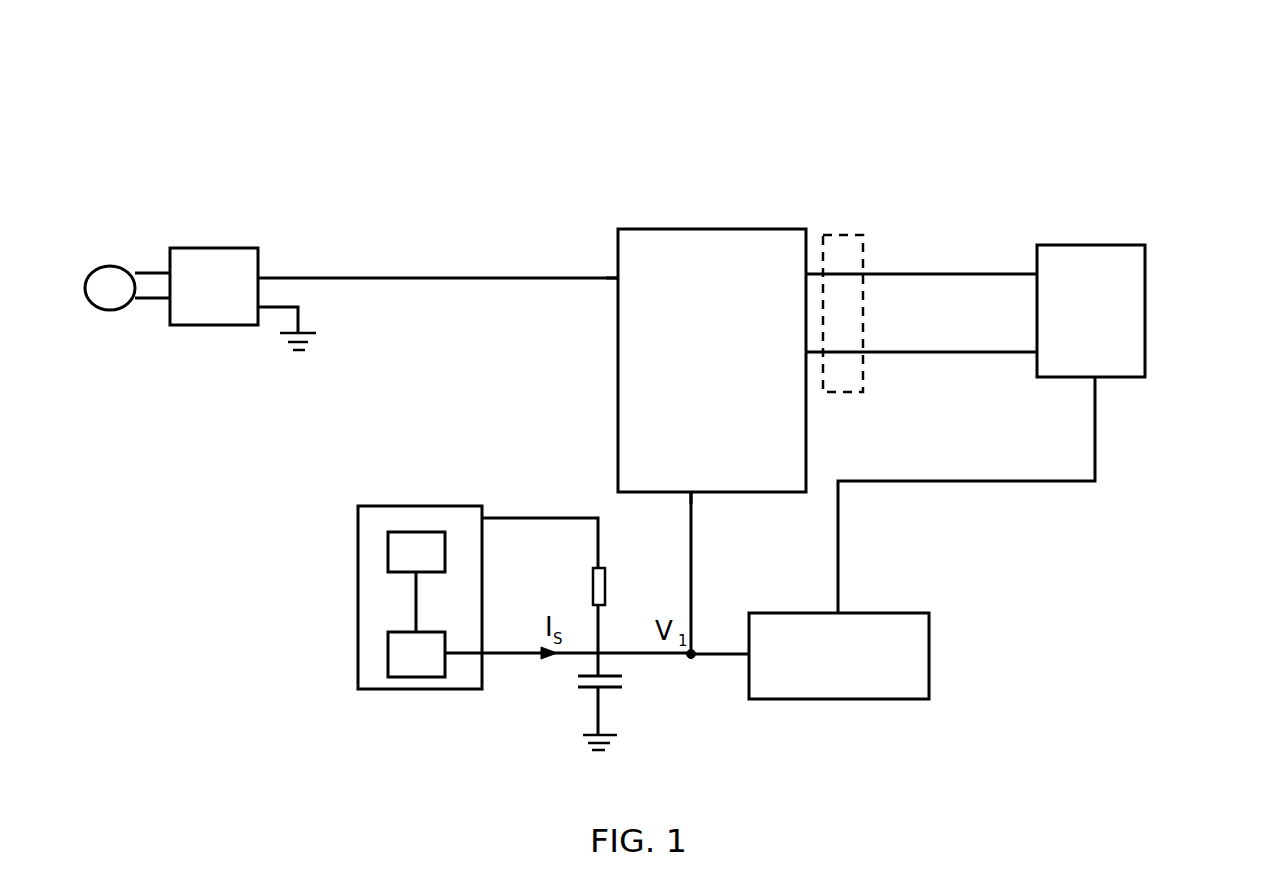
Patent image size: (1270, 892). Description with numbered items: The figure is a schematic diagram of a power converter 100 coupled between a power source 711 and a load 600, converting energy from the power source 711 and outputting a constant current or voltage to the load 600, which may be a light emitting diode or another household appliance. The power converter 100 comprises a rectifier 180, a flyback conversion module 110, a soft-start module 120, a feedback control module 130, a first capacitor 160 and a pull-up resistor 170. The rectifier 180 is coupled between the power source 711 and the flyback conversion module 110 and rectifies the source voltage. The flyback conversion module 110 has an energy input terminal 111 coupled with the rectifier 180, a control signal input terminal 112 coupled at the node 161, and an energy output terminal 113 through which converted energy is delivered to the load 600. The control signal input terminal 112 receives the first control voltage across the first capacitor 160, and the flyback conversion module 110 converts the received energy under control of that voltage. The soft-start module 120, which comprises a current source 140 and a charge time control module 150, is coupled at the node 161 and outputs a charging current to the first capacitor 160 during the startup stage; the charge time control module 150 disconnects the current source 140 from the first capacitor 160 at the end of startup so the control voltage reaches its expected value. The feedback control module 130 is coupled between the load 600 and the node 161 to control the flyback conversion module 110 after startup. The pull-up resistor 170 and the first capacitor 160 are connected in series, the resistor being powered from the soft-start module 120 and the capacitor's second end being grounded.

The power converter 100 is at (412, 98).
The power source 711 is at (108, 265).
The rectifier 180 is at (203, 248).
The flyback conversion module 110 is at (702, 229).
The energy input terminal 111 is at (618, 278).
The control signal input terminal 112 is at (692, 493).
The energy output terminal 113 is at (842, 237).
The load 600 is at (1147, 275).
The feedback control module 130 is at (895, 612).
The soft-start module 120 is at (407, 505).
The current source 140 is at (388, 558).
The charge time control module 150 is at (388, 657).
The pull-up resistor 170 is at (593, 590).
The first capacitor 160 is at (585, 687).
The node 161 is at (688, 657).